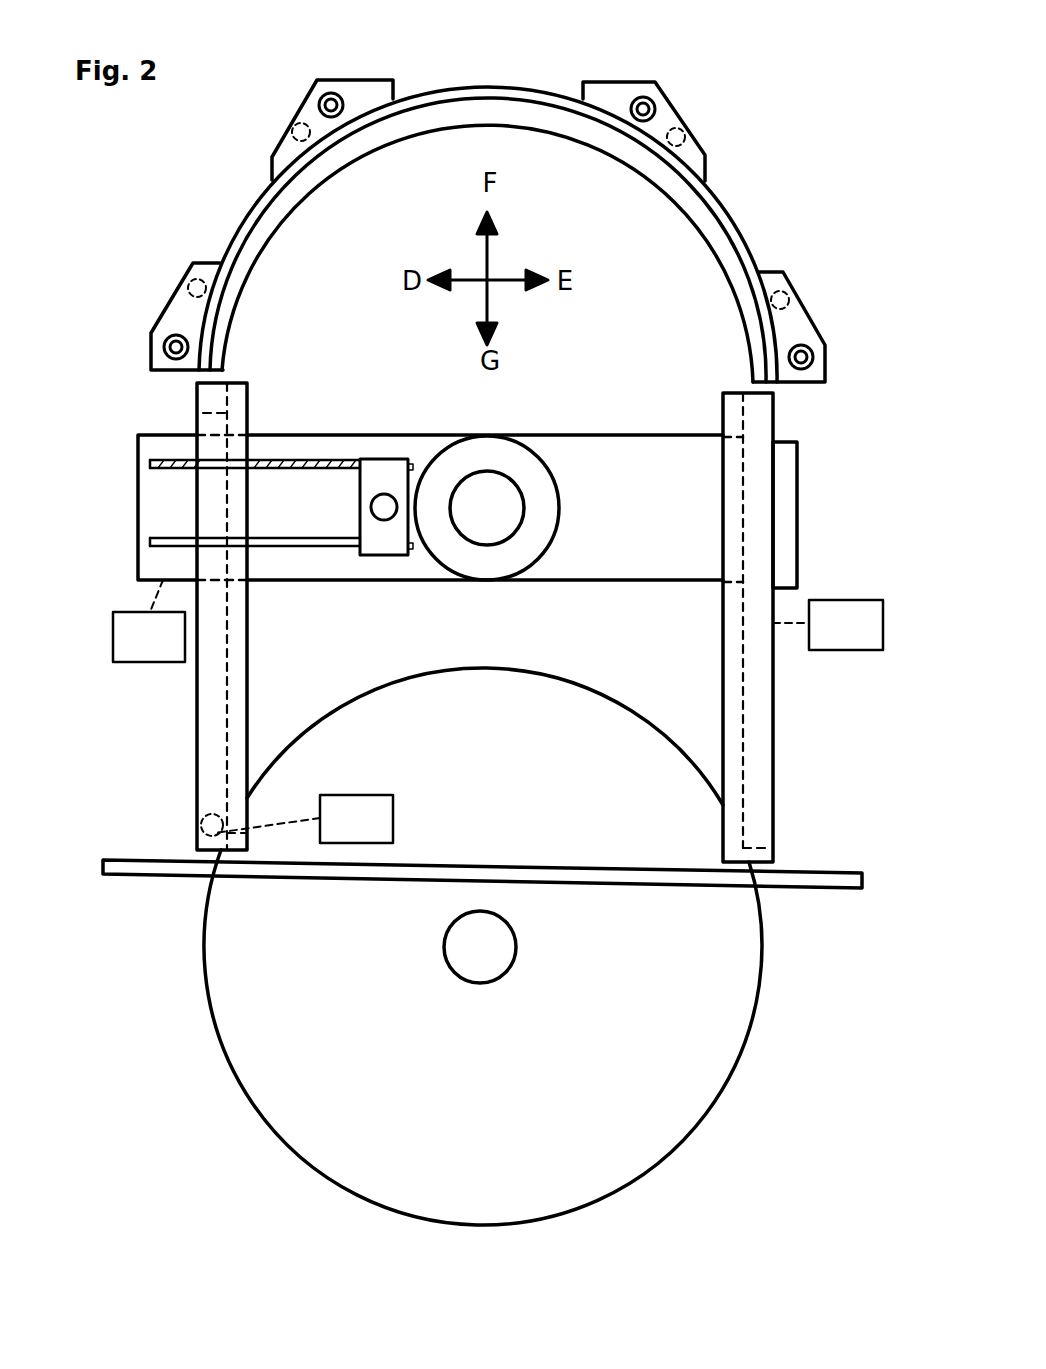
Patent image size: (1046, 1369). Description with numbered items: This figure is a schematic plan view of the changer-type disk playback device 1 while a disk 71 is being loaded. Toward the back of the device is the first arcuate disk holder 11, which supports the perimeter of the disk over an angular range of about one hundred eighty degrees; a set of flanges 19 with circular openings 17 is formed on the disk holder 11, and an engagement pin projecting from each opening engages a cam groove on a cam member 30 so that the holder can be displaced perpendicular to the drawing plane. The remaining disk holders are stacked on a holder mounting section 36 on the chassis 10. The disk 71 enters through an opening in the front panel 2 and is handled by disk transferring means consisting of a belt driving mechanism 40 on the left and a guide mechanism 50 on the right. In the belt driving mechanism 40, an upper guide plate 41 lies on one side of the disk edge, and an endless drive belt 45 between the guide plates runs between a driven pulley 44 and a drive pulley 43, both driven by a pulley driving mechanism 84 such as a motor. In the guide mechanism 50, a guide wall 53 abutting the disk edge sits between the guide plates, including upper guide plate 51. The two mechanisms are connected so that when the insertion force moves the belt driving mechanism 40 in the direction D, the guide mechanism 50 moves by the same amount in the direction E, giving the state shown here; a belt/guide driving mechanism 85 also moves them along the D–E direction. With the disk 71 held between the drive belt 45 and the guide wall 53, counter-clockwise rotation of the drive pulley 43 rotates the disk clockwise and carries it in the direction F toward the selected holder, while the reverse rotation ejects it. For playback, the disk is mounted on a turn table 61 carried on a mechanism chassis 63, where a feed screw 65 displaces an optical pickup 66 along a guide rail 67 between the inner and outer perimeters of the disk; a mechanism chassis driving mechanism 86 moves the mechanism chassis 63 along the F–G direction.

The changer-type disk playback device 1 is at (845, 143).
The front panel 2 is at (482, 897).
The chassis 10 is at (493, 631).
The first arcuate disk holder 11 is at (488, 202).
The circular opening 17 is at (487, 185).
The flange 19 is at (482, 197).
The cam member 30 is at (228, 92).
The holder mounting section 36 is at (491, 216).
The belt driving mechanism 40 is at (303, 609).
The upper guide plate 41 is at (284, 646).
The drive pulley 43 is at (162, 790).
The driven pulley 44 is at (282, 368).
The endless drive belt 45 is at (281, 687).
The guide mechanism 50 is at (825, 760).
The upper guide plate 51 is at (678, 652).
The guide wall 53 is at (682, 751).
The turn table 61 is at (508, 487).
The mechanism chassis 63 is at (467, 531).
The feed screw 65 is at (266, 428).
The optical pickup 66 is at (431, 467).
The guide rail 67 is at (298, 576).
The disk 71 is at (483, 946).
The pulley driving mechanism 84 is at (304, 819).
The belt/guide driving mechanism 85 is at (828, 625).
The mechanism chassis driving mechanism 86 is at (149, 621).